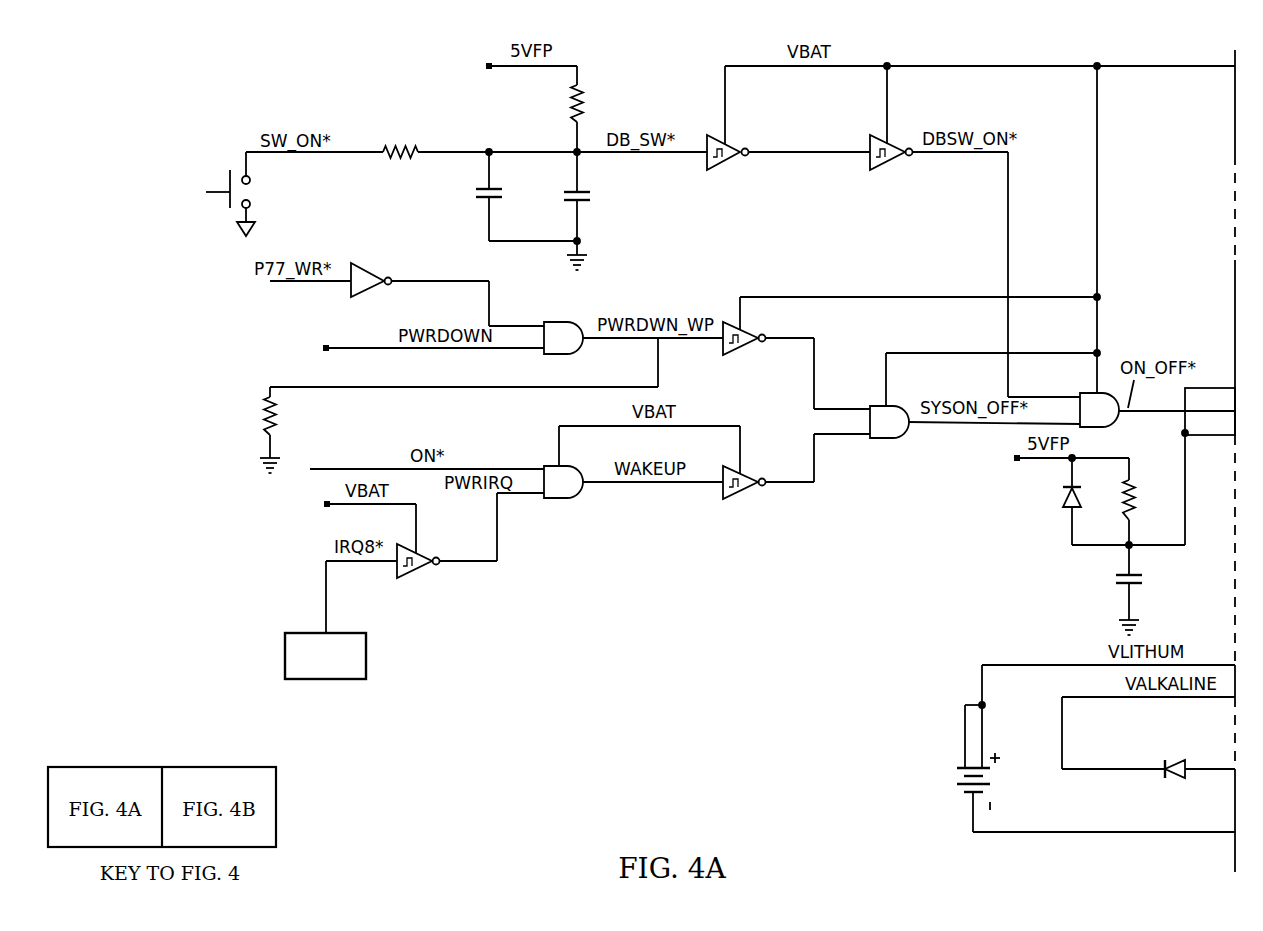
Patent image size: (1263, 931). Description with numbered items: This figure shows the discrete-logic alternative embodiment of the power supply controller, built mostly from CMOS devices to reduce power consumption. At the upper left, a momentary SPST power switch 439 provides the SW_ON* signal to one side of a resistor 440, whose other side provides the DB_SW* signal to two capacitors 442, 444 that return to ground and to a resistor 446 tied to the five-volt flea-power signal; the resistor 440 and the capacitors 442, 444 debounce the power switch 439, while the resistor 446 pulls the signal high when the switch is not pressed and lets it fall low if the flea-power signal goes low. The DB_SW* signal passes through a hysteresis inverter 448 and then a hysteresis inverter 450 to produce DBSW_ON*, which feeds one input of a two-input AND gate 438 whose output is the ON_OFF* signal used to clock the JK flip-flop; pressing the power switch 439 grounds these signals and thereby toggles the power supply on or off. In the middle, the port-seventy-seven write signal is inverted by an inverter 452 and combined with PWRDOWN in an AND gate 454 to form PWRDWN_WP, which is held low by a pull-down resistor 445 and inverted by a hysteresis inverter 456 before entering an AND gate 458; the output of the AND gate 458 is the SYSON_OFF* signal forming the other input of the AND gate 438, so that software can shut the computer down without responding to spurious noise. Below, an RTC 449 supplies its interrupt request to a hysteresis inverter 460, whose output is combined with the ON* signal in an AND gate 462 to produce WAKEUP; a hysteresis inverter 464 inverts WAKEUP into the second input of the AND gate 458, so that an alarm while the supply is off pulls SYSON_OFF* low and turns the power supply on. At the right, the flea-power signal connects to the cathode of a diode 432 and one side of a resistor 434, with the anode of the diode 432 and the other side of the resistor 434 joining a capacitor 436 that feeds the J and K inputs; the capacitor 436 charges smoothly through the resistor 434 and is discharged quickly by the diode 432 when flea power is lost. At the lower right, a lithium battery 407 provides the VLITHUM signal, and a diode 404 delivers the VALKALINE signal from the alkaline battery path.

The momentary SPST power switch 439 is at (226, 178).
The pullup resistor 440 is at (397, 148).
The capacitor 442 is at (476, 196).
The capacitor 444 is at (592, 201).
The resistor 446 is at (589, 100).
The hysteresis inverter 448 is at (717, 170).
The hysteresis inverter 450 is at (881, 170).
The inverter 452 is at (365, 270).
The two-input AND gate 454 is at (558, 322).
The hysteresis inverter 456 is at (738, 355).
The AND gate 458 is at (886, 438).
The hysteresis inverter 460 is at (407, 578).
The AND gate 462 is at (558, 498).
The hysteresis inverter 464 is at (738, 499).
The pull-down resistor 445 is at (262, 419).
The real time clock 449 is at (284, 644).
The two-input AND gate 438 is at (1099, 428).
The diode 432 is at (1063, 490).
The resistor 434 is at (1140, 490).
The capacitor 436 is at (1116, 580).
The diode 404 is at (1177, 764).
The lithium battery 407 is at (953, 772).